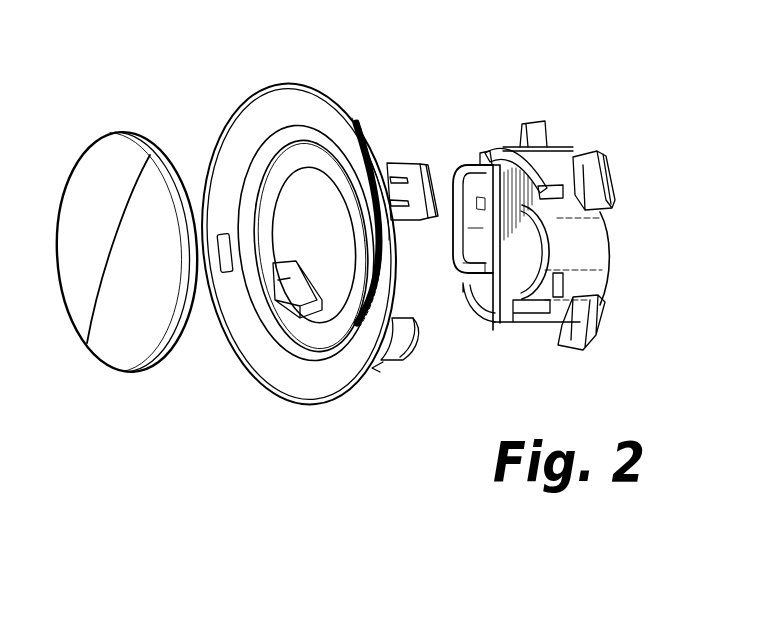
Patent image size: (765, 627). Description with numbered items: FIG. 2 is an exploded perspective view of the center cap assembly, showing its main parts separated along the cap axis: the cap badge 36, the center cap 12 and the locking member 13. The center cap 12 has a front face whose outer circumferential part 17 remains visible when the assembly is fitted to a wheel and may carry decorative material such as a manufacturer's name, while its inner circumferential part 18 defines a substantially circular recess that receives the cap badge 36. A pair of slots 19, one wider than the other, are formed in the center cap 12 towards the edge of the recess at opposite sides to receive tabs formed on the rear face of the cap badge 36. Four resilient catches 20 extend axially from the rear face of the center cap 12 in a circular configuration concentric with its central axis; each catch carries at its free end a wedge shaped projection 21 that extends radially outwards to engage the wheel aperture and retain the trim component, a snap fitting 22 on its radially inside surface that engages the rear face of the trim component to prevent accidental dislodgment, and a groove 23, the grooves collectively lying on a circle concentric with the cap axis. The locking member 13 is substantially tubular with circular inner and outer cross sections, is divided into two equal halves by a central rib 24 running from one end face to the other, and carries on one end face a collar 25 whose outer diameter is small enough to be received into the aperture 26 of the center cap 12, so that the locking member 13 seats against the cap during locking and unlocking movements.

The center cap 12 is at (303, 243).
The locking member 13 is at (578, 148).
The outer circumferential part 17 is at (248, 108).
The inner circumferential part 18 is at (335, 173).
The slots 19 is at (310, 130).
The resilient catches 20 is at (420, 222).
The wedge shaped projection 21 is at (429, 166).
The snap fitting 22 is at (406, 222).
The groove 23 is at (413, 162).
The central rib 24 is at (495, 297).
The collar 25 is at (486, 163).
The aperture 26 is at (327, 257).
The cap badge 36 is at (134, 132).